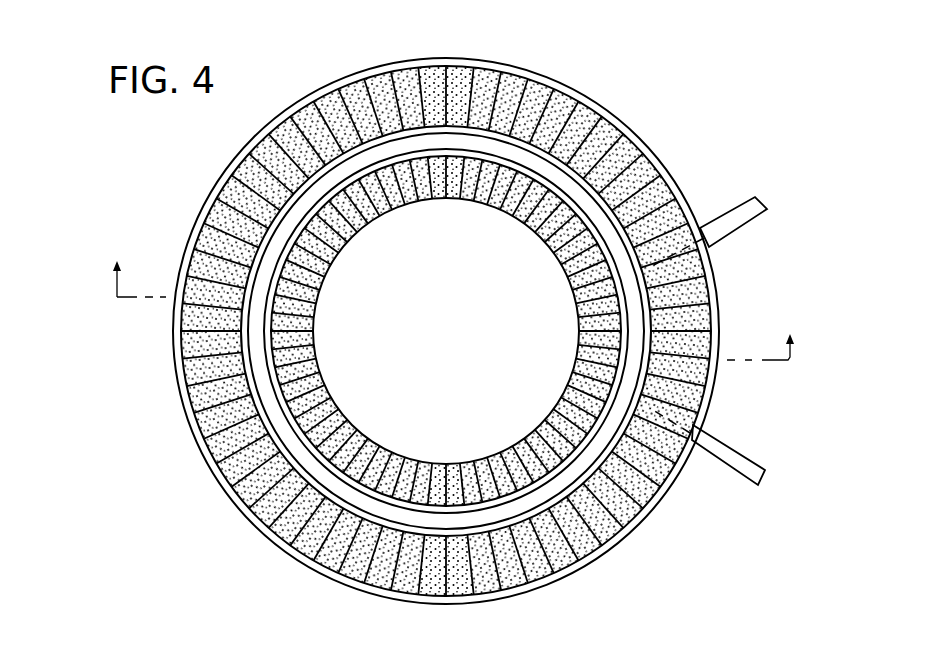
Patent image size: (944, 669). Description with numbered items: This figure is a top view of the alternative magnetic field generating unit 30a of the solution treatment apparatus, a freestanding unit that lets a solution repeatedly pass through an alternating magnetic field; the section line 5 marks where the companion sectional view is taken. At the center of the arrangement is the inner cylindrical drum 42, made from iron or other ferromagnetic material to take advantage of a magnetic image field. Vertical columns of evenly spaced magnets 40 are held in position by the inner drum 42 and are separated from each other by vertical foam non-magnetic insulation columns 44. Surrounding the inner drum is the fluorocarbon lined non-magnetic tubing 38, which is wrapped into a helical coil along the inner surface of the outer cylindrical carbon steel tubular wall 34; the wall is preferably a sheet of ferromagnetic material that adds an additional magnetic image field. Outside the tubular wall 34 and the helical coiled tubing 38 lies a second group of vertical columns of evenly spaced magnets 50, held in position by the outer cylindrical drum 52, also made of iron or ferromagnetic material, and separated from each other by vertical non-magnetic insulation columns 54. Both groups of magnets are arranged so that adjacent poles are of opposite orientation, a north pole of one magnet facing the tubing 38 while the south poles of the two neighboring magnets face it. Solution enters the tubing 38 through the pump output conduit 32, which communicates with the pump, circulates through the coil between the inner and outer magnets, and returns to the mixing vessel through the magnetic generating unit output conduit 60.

The magnetic field generating unit 30a is at (435, 325).
The pump output conduit 32 is at (734, 196).
The tubular wall 34 is at (594, 492).
The tubing 38 is at (562, 173).
The magnets 40 is at (399, 208).
The inner cylindrical drum 42 is at (288, 445).
The insulation columns 44 is at (560, 247).
The magnets 50 is at (402, 78).
The outer cylindrical drum 52 is at (536, 63).
The insulation columns 54 is at (198, 276).
The magnetic generating unit output conduit 60 is at (735, 492).
The section line 5- 5 is at (452, 324).